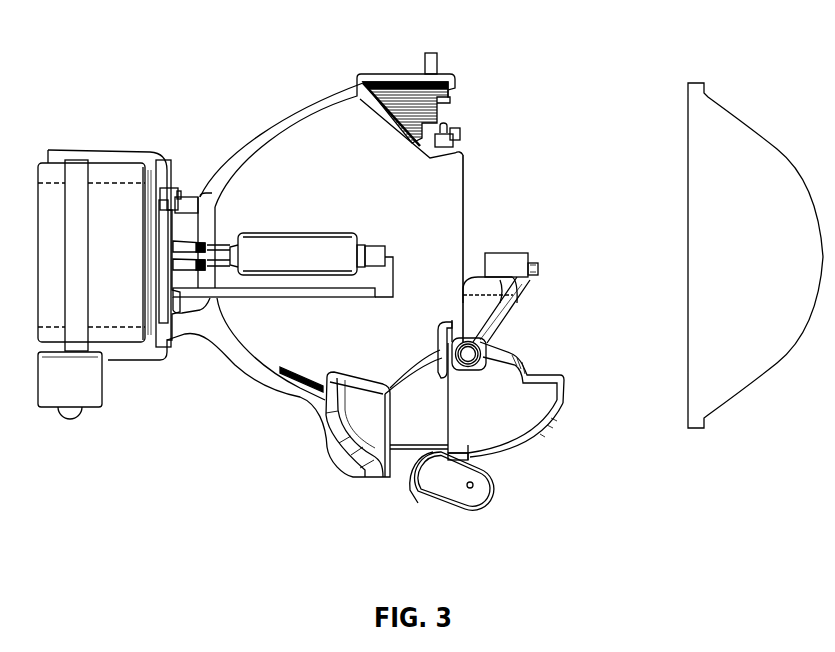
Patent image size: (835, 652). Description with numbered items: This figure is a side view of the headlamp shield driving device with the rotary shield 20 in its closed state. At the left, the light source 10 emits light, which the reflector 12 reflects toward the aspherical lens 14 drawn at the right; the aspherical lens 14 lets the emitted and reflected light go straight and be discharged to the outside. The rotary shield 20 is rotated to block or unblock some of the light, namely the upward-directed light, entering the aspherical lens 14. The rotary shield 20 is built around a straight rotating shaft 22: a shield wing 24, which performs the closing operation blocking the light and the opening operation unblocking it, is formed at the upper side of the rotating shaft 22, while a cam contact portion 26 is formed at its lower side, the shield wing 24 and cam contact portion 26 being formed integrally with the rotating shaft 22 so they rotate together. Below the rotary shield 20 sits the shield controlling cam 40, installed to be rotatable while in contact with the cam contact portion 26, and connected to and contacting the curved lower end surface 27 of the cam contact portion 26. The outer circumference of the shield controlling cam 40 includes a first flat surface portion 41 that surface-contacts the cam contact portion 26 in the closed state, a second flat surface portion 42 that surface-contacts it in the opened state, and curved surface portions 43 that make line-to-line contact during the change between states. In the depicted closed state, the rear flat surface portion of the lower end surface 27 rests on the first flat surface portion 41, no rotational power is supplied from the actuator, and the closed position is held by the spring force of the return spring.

The light source 10 is at (283, 243).
The reflector 12 is at (298, 116).
The aspherical lens 14 is at (737, 128).
The rotary shield 20 is at (505, 240).
The rotating shaft 22 is at (487, 345).
The shield wing 24 is at (528, 255).
The cam contact portion 26 is at (549, 392).
The lower end surface 27 is at (525, 443).
The shield controlling cam 40 is at (416, 505).
The first flat surface portion 41 is at (410, 487).
The second flat surface portion 42 is at (447, 504).
The curved surface portions 43 is at (495, 500).